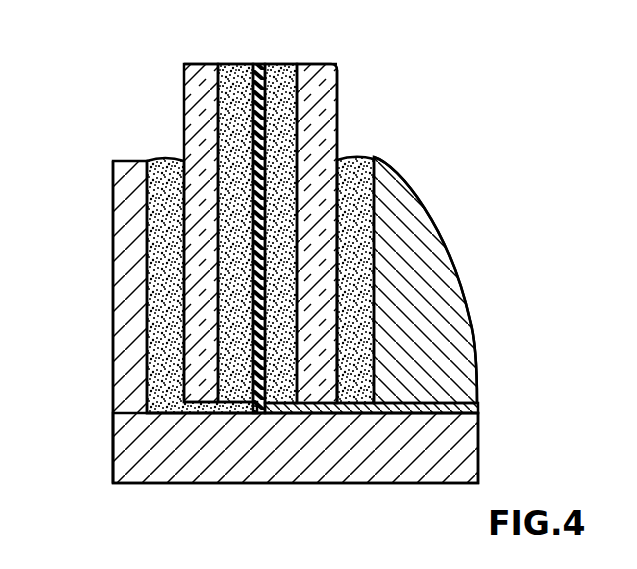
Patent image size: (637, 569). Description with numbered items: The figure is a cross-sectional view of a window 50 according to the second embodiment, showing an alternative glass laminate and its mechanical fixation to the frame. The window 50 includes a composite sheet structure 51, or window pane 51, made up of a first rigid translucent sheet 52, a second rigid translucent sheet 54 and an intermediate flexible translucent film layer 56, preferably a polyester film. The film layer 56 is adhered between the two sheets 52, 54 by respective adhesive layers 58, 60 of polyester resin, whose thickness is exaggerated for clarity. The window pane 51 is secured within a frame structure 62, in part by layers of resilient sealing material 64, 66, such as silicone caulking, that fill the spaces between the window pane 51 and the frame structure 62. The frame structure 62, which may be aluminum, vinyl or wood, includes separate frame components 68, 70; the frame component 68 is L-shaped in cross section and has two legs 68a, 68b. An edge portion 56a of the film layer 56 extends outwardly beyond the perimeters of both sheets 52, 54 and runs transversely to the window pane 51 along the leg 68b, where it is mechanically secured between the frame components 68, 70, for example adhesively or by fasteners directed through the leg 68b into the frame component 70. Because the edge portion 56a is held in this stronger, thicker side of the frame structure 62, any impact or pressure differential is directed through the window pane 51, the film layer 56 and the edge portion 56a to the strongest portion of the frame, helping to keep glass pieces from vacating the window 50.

The window 50 is at (293, 58).
The composite sheet structure 51 is at (338, 80).
The first rigid translucent sheet 52 is at (184, 64).
The second rigid translucent sheet 54 is at (330, 63).
The intermediate flexible translucent film layer 56 is at (262, 63).
The edge portion 56a is at (445, 405).
The adhesive layer 58 is at (233, 113).
The adhesive layer 60 is at (283, 128).
The frame structure 62 is at (411, 177).
The resilient sealing material 64 is at (150, 215).
The resilient sealing material 66 is at (368, 228).
The frame component 68 is at (113, 282).
The leg 68a is at (112, 335).
The leg 68b is at (472, 445).
The frame component 70 is at (463, 290).